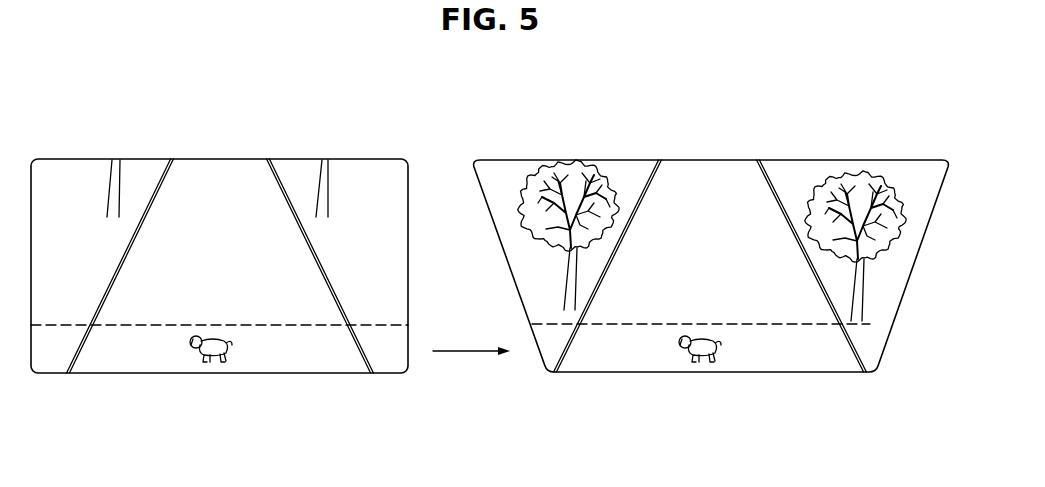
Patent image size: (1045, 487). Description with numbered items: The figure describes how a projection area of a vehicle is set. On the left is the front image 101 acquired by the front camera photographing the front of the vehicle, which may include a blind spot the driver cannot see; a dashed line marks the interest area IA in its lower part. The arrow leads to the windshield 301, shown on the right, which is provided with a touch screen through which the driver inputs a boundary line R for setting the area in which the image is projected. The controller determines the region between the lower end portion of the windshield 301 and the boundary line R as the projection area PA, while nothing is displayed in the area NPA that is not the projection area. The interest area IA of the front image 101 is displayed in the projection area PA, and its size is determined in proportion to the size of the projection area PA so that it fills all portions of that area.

The front image 101 is at (371, 159).
The interest area IA is at (333, 373).
The windshield 301 is at (592, 160).
The area that is not the projection area NPA is at (907, 160).
The projection area PA is at (635, 372).
The boundary line R is at (870, 324).